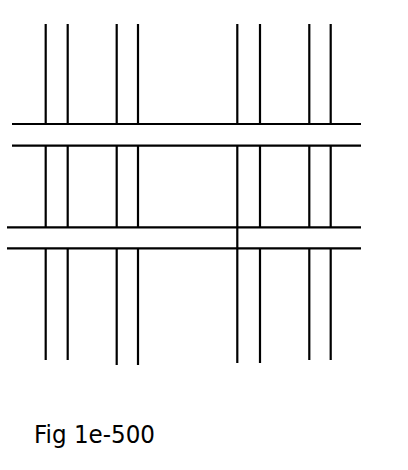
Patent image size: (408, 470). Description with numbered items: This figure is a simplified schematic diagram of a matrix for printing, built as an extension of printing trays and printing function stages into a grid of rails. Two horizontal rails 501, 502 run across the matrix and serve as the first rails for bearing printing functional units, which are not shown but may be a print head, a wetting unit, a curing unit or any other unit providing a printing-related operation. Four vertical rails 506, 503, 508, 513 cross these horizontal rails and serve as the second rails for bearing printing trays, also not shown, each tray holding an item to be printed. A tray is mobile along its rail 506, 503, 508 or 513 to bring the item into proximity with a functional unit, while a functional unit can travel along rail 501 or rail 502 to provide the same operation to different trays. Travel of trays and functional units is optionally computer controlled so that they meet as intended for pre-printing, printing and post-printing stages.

The rail 501 is at (186, 135).
The rail 502 is at (184, 237).
The rail 503 is at (128, 194).
The rail 506 is at (57, 192).
The rail 508 is at (248, 193).
The rail 513 is at (319, 192).